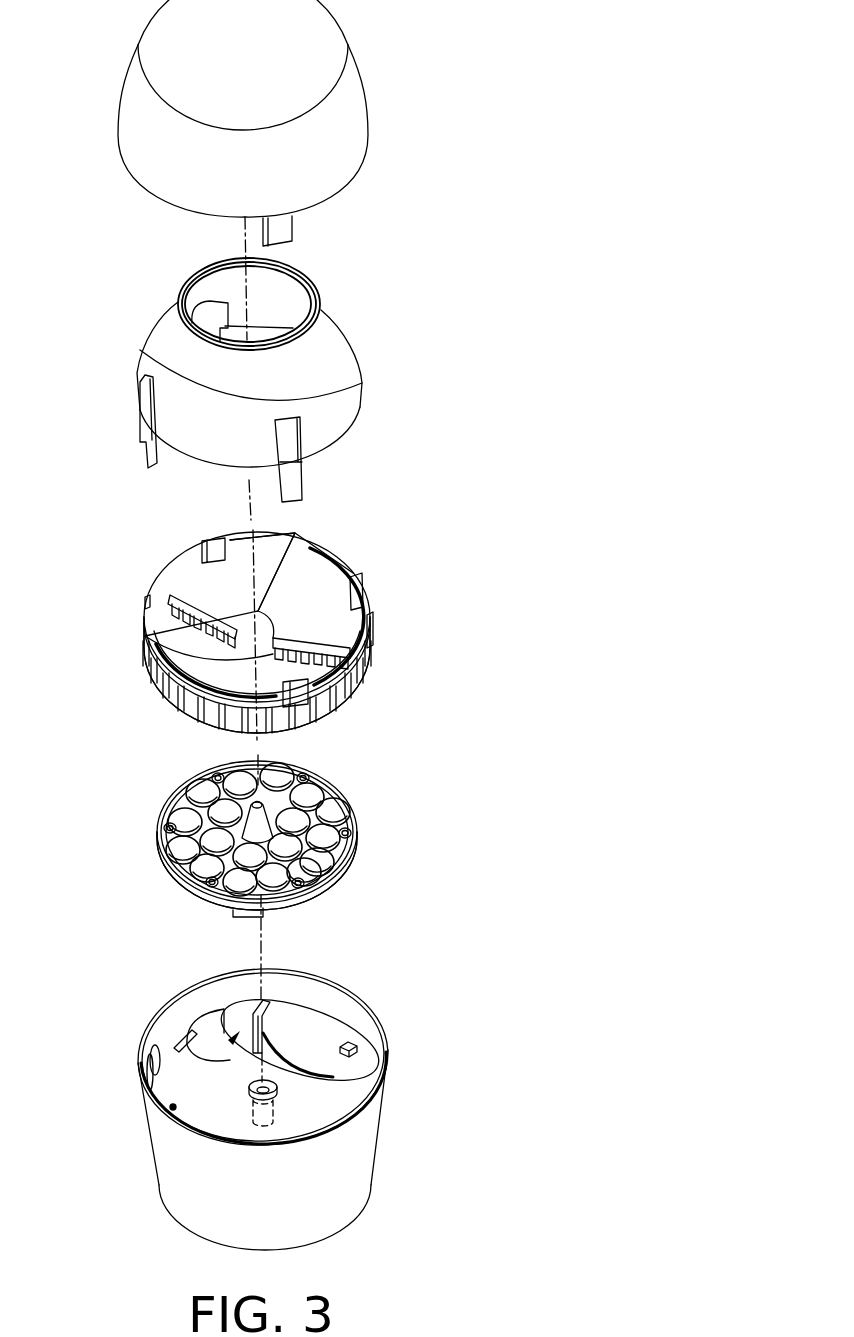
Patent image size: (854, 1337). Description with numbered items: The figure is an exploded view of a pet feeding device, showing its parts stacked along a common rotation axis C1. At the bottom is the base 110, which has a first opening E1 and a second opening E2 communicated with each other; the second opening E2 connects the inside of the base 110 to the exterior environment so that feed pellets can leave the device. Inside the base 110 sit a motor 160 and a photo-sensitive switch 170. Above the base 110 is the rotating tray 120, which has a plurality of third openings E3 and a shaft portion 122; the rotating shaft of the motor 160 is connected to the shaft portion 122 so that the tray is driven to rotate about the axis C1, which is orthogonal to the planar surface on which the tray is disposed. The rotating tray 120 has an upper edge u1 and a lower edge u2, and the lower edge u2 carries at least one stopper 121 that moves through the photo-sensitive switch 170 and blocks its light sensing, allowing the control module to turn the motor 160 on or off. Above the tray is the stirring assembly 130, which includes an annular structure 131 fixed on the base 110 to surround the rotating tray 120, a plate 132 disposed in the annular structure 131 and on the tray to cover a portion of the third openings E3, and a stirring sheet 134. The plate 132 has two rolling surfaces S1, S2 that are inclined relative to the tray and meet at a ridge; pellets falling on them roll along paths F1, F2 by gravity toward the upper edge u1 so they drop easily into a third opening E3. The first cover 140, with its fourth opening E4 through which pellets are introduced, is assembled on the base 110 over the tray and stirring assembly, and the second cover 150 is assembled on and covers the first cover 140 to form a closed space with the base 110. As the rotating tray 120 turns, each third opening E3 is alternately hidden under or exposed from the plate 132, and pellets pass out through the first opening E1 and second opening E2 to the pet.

The second cover 150 is at (352, 120).
The first cover 140 is at (338, 397).
The fourth opening E4 is at (287, 307).
The stirring assembly 130 is at (300, 610).
The annular structure 131 is at (345, 690).
The plate 132 is at (303, 540).
The stirring sheet 134 is at (272, 662).
The rolling surface S1 is at (199, 594).
The rolling surface S2 is at (306, 578).
The path F1 is at (265, 575).
The path F2 is at (292, 578).
The rotating tray 120 is at (319, 843).
The stopper 121 is at (338, 889).
The shaft portion 122 is at (258, 822).
The third opening E3 is at (197, 801).
The upper edge u1 is at (178, 813).
The lower edge u2 is at (191, 895).
The axis C1 is at (262, 952).
The base 110 is at (282, 1100).
The motor 160 is at (262, 1118).
The photo-sensitive switch 170 is at (357, 1045).
The first opening E1 is at (296, 1074).
The second opening E2 is at (178, 1047).